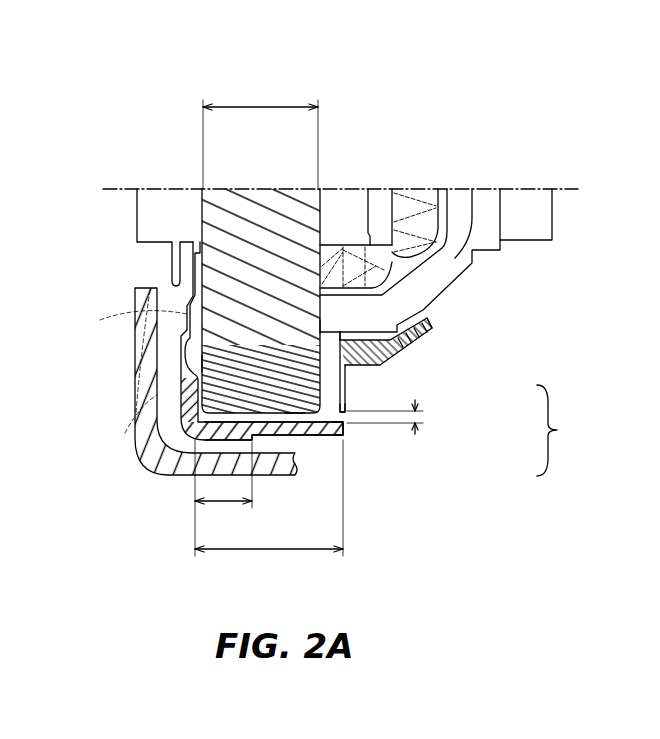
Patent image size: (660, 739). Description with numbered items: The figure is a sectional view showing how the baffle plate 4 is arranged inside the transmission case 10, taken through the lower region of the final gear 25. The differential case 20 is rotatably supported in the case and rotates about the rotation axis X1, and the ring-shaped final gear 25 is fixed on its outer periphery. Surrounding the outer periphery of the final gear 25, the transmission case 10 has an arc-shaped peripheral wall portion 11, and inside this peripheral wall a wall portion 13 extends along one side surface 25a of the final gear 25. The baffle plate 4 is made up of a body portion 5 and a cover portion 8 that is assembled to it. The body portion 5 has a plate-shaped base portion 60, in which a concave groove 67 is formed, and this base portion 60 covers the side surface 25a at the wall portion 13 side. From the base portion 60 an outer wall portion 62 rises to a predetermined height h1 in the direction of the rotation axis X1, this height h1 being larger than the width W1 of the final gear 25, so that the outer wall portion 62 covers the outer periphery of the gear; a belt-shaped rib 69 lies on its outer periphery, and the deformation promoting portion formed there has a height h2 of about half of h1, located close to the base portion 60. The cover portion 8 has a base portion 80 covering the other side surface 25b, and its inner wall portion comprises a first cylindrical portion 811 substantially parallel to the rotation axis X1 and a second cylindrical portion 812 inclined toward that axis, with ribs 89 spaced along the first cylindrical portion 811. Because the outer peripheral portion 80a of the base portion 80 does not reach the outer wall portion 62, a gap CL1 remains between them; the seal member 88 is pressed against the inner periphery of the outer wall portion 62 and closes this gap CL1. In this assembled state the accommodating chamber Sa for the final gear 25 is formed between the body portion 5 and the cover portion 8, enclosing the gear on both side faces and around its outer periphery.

The baffle plate 4 is at (560, 430).
The body portion 5 is at (345, 436).
The cover portion 8 is at (436, 364).
The transmission case 10 is at (140, 457).
The peripheral wall portion 11 is at (288, 476).
The wall portion 13 is at (148, 385).
The differential case 20 is at (463, 268).
The final gear 25 is at (313, 187).
The side surface of the final gear 25a is at (203, 363).
The side surface of the final gear 25b is at (323, 326).
The base portion 60 is at (190, 312).
The outer wall portion 62 is at (293, 418).
The concave groove 67 is at (184, 358).
The rib 69 is at (158, 427).
The base portion 80 is at (366, 366).
The outer peripheral portion 80a is at (345, 409).
The seal member 88 is at (340, 436).
The ribs 89 is at (395, 348).
The first cylindrical portion 811 is at (358, 325).
The second cylindrical portion 812 is at (433, 325).
The accommodating chamber Sa is at (327, 372).
The width of the final gear W1 is at (260, 134).
The height of the outer wall portion h1 is at (269, 510).
The height of the deformation promoting portion h2 is at (223, 498).
The gap CL1 is at (407, 417).
The rotation axis X1 is at (353, 191).